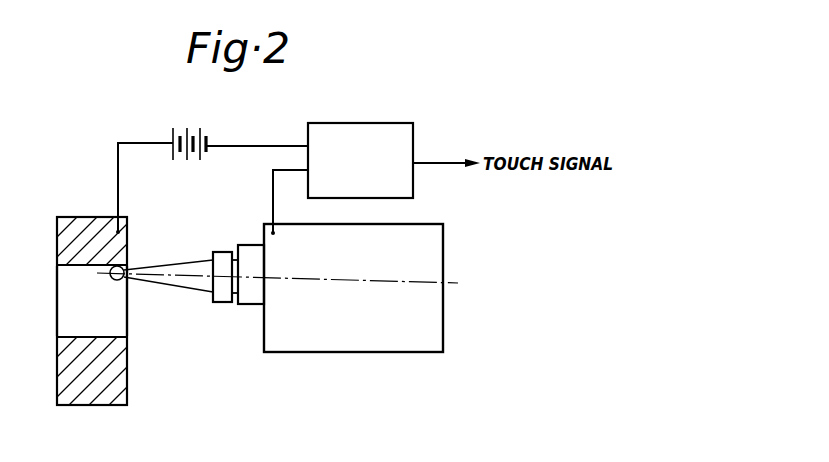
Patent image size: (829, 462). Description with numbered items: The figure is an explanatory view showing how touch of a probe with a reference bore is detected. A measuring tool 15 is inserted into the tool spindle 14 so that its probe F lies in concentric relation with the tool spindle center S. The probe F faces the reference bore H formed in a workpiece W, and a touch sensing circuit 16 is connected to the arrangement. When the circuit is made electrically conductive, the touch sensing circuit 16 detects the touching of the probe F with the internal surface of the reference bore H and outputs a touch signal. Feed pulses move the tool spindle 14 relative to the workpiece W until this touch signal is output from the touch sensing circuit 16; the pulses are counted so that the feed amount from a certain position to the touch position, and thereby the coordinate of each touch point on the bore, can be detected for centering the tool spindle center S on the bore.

The touch sensing circuit 16 is at (398, 126).
The measuring tool 15 is at (222, 296).
The tool spindle 14 is at (250, 302).
The tool spindle center S is at (425, 281).
The probe F is at (117, 281).
The reference bore H is at (66, 270).
The workpiece W is at (95, 398).